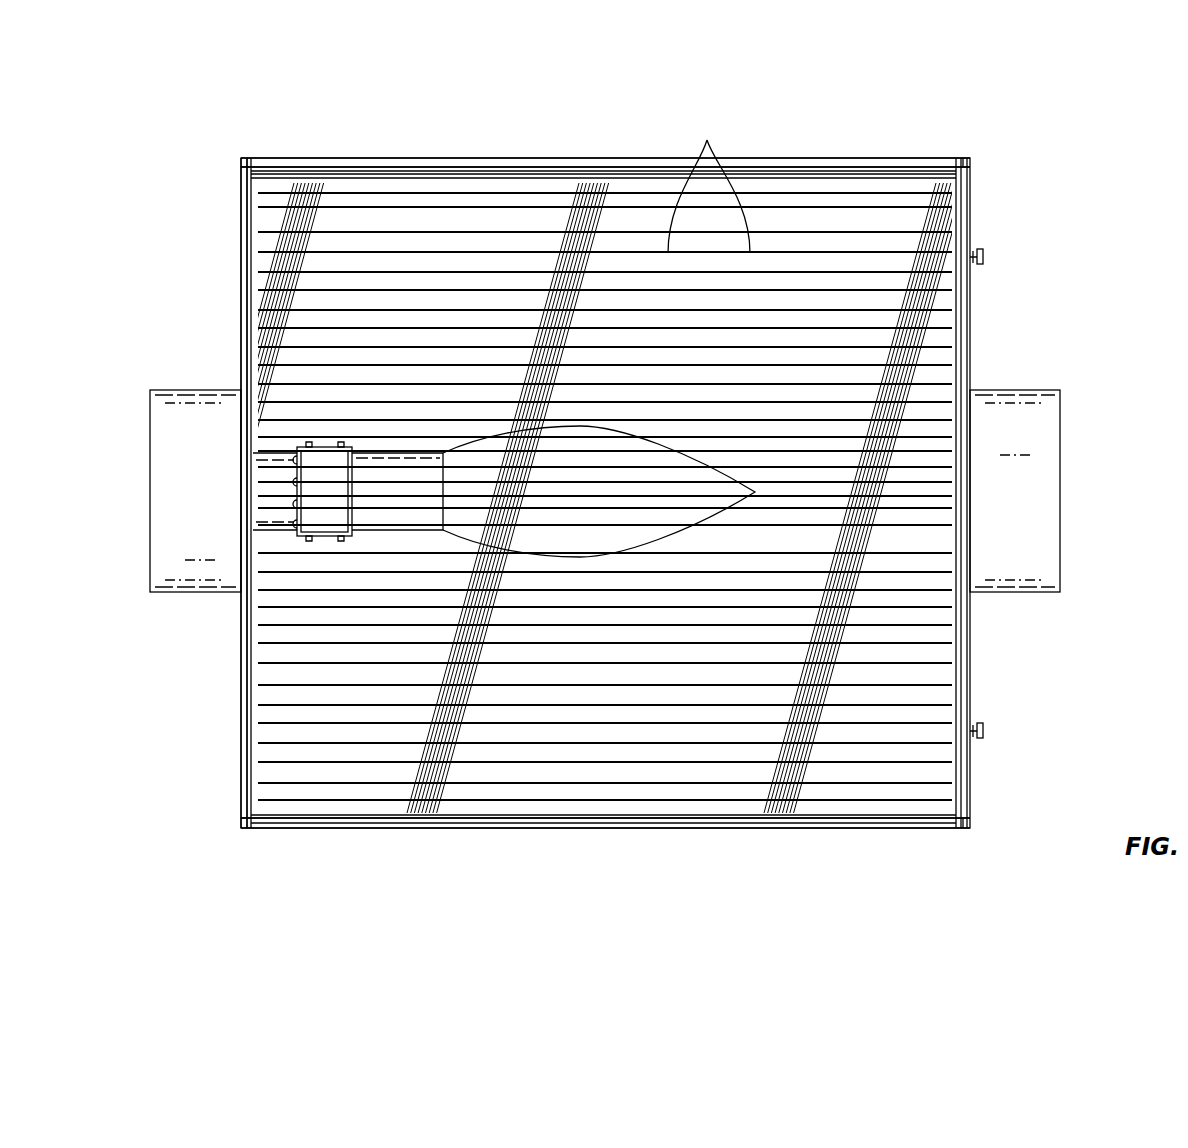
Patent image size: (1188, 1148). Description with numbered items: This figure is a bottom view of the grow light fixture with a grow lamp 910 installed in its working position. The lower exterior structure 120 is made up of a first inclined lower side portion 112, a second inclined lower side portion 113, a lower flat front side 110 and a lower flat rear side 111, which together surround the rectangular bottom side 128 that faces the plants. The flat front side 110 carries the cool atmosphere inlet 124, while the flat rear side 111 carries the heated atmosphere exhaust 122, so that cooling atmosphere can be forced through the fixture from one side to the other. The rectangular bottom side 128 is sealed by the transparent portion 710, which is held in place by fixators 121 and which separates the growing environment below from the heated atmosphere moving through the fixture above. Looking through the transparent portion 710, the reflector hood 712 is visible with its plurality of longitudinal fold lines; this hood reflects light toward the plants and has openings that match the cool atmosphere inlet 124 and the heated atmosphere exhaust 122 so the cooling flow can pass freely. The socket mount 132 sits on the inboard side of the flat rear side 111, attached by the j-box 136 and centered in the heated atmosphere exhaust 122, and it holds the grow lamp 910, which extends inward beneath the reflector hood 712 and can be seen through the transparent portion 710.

The lower flat front side 110 is at (968, 325).
The lower flat rear side 111 is at (243, 652).
The first inclined lower side portion 112 is at (750, 845).
The second inclined lower side portion 113 is at (823, 138).
The lower exterior structure 120 is at (345, 143).
The fixators 121 is at (981, 249).
The heated atmosphere exhaust 122 is at (212, 506).
The cool atmosphere inlet 124 is at (1029, 506).
The rectangular bottom side 128 is at (539, 200).
The socket mount 132 is at (402, 503).
The j-box 136 is at (336, 503).
The transparent portion 710 is at (840, 648).
The reflector hood 712 is at (709, 184).
The grow lamp 910 is at (565, 537).